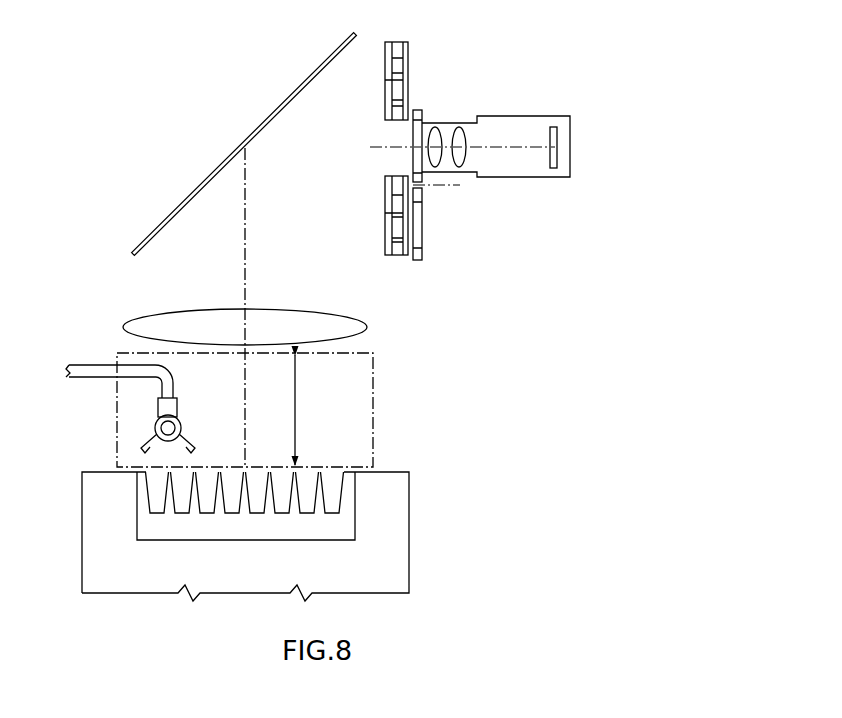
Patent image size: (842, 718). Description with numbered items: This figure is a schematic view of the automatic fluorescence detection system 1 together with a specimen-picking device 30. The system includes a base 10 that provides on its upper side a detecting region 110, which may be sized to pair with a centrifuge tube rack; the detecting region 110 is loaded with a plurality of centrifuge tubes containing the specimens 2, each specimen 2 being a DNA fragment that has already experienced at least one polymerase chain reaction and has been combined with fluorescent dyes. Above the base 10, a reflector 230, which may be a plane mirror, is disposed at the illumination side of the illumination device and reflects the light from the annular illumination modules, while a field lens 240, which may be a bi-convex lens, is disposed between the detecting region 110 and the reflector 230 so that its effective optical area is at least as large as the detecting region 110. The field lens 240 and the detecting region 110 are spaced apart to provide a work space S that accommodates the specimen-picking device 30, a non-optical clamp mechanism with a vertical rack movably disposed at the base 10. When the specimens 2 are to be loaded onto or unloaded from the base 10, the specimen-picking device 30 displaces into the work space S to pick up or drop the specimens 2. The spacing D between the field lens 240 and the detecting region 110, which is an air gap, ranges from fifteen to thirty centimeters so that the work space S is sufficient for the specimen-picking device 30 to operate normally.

The automatic fluorescence detection system 1 is at (487, 297).
The specimen 2 is at (332, 483).
The base 10 is at (398, 543).
The specimen-picking device 30 is at (159, 408).
The detecting region 110 is at (322, 466).
The reflector 230 is at (184, 197).
The field lens 240 is at (120, 325).
The work space S is at (374, 368).
The spacing D is at (285, 410).